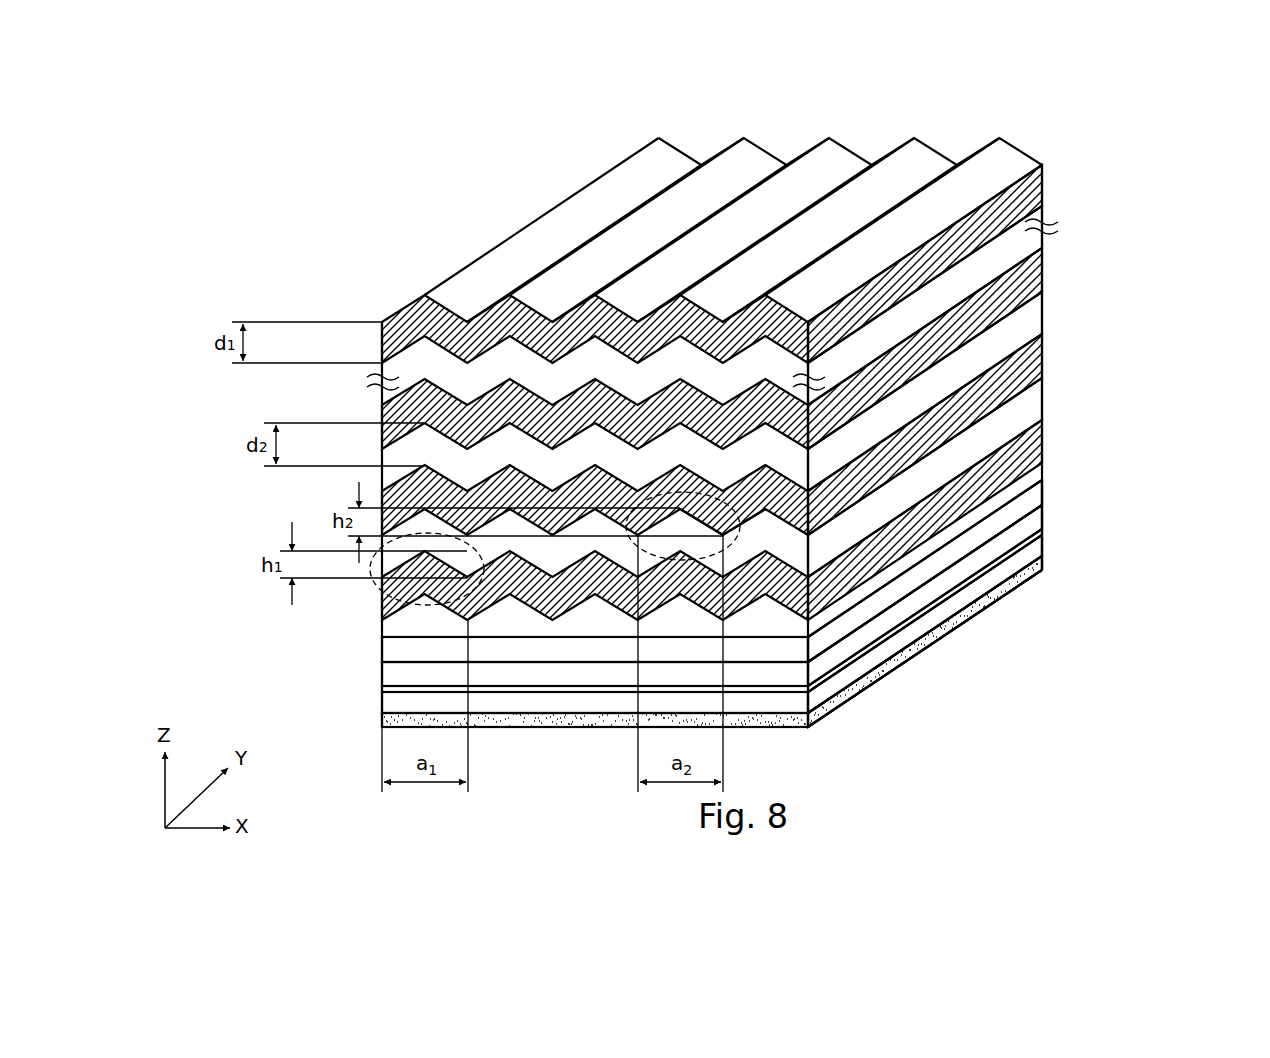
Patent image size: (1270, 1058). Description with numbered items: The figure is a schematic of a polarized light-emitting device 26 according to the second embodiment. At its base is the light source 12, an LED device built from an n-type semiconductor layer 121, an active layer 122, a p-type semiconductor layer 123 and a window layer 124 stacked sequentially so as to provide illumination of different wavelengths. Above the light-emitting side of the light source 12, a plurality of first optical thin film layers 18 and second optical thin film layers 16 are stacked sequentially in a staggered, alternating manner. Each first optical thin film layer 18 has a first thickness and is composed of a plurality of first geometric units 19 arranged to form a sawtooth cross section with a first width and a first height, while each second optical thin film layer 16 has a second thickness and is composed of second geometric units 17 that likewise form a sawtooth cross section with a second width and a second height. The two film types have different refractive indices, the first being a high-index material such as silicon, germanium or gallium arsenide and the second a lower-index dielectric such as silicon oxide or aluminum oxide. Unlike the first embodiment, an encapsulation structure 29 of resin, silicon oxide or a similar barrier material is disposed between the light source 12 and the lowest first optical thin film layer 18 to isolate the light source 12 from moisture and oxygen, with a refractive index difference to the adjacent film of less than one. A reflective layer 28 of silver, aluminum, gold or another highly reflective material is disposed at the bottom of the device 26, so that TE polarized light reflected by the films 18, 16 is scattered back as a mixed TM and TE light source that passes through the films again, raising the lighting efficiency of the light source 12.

The light source 12 is at (1193, 455).
The n-type semiconductor layer 121 is at (1038, 555).
The active layer 122 is at (1038, 538).
The p-type semiconductor layer 123 is at (1036, 523).
The window layer 124 is at (1030, 502).
The second optical thin film layer 16 is at (1027, 243).
The second geometric unit 17 is at (728, 537).
The first optical thin film layer 18 is at (1035, 189).
The first geometric unit 19 is at (376, 583).
The polarized light-emitting device 26 is at (1183, 140).
The reflective layer 28 is at (1035, 577).
The encapsulation structure 29 is at (1043, 478).